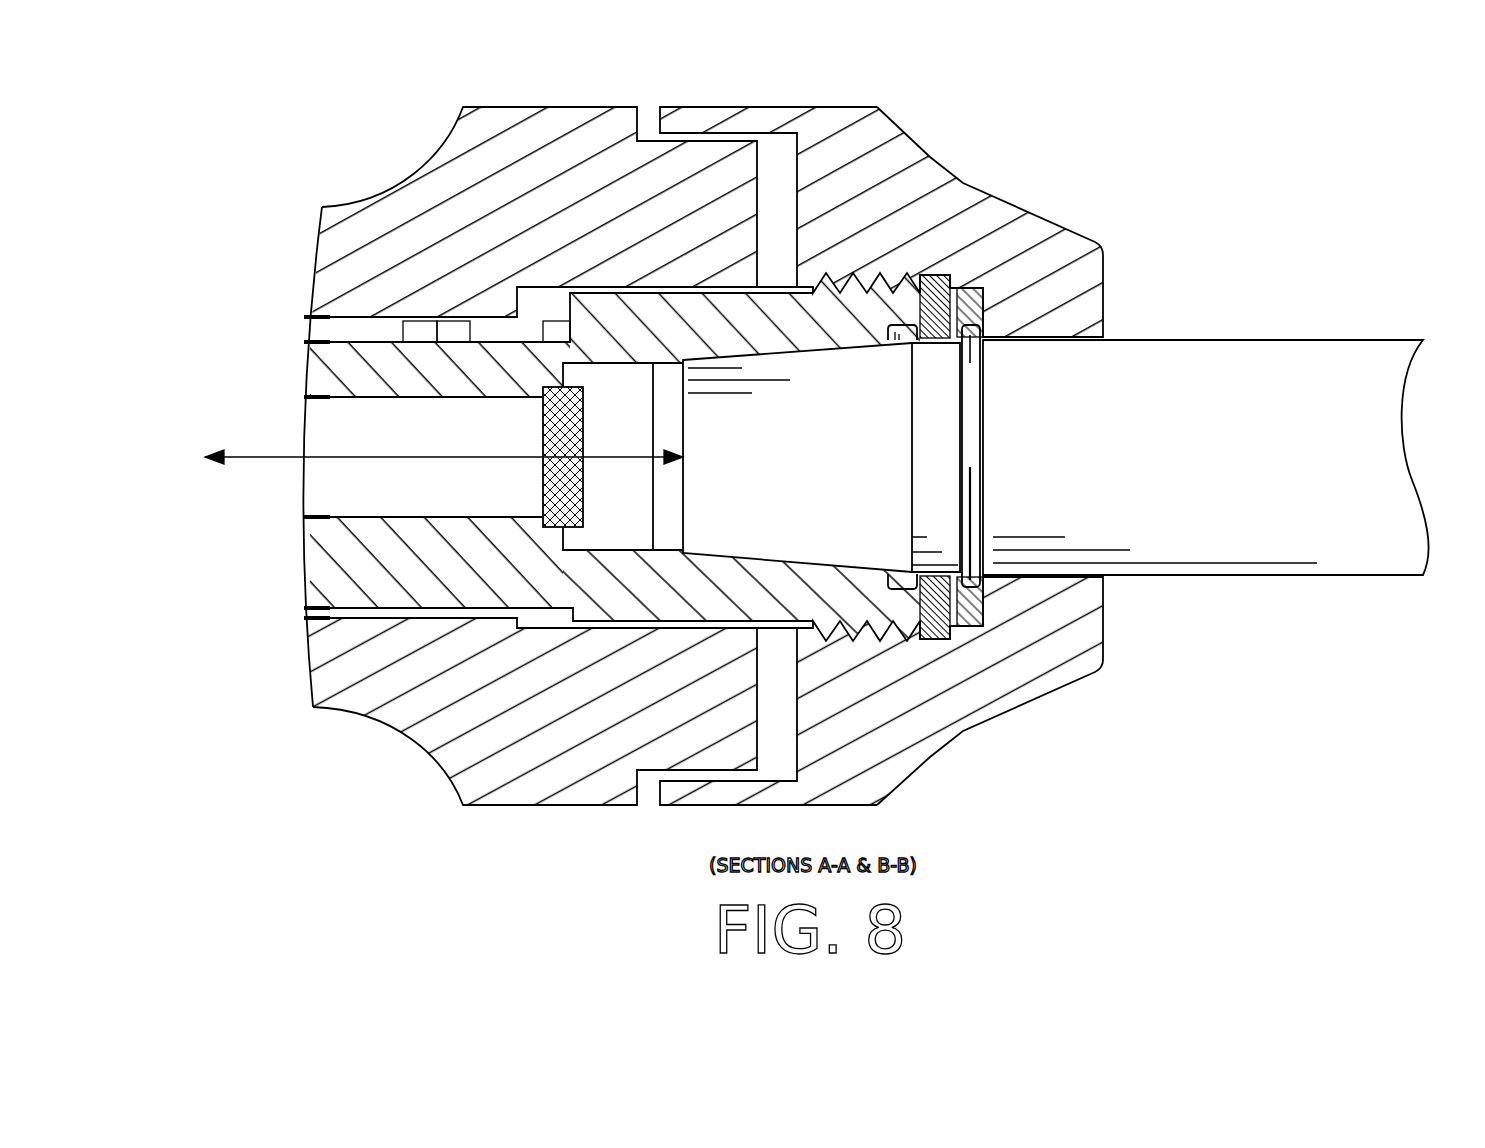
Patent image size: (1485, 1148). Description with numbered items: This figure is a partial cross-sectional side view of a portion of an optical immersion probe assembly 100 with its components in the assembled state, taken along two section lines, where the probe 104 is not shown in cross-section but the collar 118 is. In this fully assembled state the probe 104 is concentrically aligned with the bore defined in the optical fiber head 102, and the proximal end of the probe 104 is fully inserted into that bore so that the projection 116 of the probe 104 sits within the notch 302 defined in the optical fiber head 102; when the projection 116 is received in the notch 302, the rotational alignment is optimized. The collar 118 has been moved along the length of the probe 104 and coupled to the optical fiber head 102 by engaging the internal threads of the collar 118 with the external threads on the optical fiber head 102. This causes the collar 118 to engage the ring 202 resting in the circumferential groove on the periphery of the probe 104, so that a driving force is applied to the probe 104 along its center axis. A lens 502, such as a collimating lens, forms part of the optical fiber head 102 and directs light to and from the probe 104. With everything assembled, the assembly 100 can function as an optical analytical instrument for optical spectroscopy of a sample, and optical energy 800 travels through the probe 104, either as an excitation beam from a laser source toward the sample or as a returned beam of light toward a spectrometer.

The optical immersion probe assembly 100 is at (1263, 117).
The optical fiber head 102 is at (336, 120).
The probe 104 is at (1466, 270).
The projection 116 is at (930, 337).
The collar 118 is at (1175, 120).
The ring 202 is at (977, 600).
The notch 302 is at (917, 333).
The lens 502 is at (543, 425).
The optical energy 800 is at (262, 440).